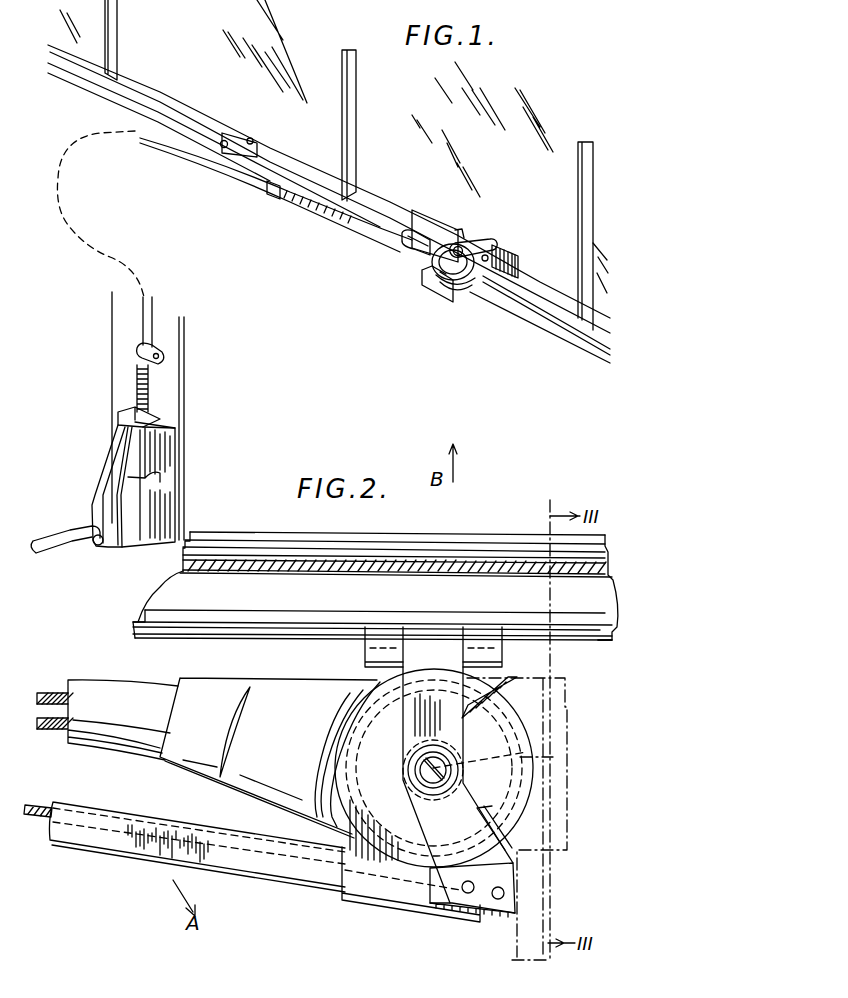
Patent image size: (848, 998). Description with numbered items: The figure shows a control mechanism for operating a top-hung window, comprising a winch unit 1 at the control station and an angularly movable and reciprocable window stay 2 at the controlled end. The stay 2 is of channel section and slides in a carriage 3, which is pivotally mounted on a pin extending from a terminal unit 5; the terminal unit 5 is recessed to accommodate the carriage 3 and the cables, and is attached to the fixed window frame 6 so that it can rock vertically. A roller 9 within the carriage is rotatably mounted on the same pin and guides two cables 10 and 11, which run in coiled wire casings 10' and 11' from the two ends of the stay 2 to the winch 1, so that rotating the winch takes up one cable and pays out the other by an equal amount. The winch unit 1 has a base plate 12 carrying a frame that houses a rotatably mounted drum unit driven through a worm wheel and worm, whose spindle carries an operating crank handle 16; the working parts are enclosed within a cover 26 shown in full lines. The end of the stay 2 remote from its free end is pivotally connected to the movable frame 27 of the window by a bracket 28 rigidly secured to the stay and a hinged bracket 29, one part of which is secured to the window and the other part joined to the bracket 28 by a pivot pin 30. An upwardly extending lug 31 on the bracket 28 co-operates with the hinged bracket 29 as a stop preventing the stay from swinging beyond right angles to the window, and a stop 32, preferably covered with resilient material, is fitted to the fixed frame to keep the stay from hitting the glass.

In FIG. 1, the winch unit 1 is at (162, 467).
In FIG. 1, the window stay 2 is at (400, 270).
In FIG. 2, the window stay 2 is at (100, 835).
In FIG. 1, the carriage 3 is at (437, 282).
In FIG. 2, the carriage 3 is at (367, 883).
In FIG. 1, the terminal unit 5 is at (428, 248).
In FIG. 2, the terminal unit 5 is at (285, 773).
In FIG. 1, the window frame 6 is at (543, 312).
In FIG. 2, the window frame 6 is at (575, 637).
In FIG. 2, the roller 9 is at (375, 730).
In FIG. 2, the cable 10 is at (103, 752).
In FIG. 2, the cable 11 is at (101, 774).
In FIG. 1, the coiled wire casing 10' is at (186, 354).
In FIG. 1, the coiled wire casing 11' is at (113, 365).
In FIG. 1, the base plate 12 is at (182, 415).
In FIG. 1, the operating crank handle 16 is at (52, 548).
In FIG. 1, the cover 26 is at (105, 453).
In FIG. 1, the movable frame 27 is at (552, 300).
In FIG. 2, the movable frame 27 is at (277, 611).
In FIG. 1, the bracket 28 is at (457, 285).
In FIG. 2, the bracket 28 is at (452, 843).
In FIG. 1, the hinged bracket 29 is at (478, 242).
In FIG. 2, the hinged bracket 29 is at (433, 650).
In FIG. 1, the pivot pin 30 is at (461, 247).
In FIG. 2, the pivot pin 30 is at (438, 776).
In FIG. 2, the lug 31 is at (503, 818).
In FIG. 1, the stop 32 is at (253, 138).